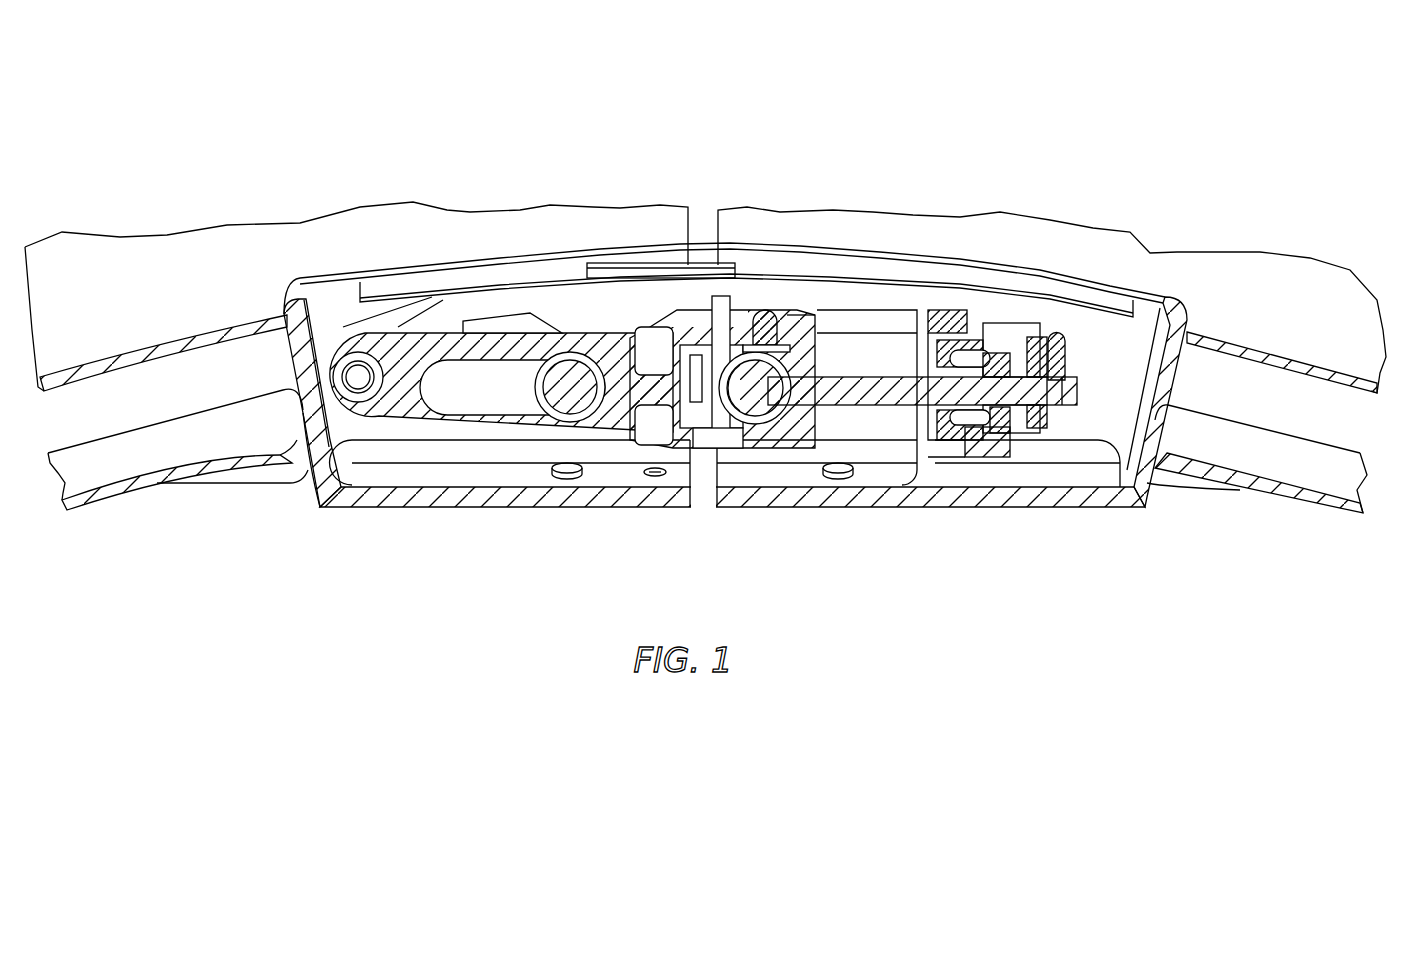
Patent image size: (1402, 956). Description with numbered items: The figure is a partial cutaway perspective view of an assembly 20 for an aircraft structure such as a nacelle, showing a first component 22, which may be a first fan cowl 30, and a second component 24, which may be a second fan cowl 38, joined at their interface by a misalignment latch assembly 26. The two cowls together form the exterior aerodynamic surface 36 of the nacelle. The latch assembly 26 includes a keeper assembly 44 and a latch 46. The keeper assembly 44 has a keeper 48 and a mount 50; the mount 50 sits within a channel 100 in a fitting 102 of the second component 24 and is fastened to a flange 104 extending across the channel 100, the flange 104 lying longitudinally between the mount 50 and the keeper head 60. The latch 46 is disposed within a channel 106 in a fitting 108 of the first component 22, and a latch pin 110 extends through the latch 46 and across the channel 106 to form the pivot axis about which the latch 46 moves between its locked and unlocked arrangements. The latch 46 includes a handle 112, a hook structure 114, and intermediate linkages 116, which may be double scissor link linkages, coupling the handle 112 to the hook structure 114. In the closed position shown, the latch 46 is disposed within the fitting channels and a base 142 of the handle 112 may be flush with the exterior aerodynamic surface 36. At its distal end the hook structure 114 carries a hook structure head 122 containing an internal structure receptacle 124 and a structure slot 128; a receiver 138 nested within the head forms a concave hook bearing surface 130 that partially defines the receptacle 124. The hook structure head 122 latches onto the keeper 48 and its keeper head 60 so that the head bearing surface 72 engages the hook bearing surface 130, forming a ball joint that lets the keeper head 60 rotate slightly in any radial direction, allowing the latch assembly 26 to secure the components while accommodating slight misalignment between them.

The assembly 20 is at (1252, 140).
The first component 22 is at (351, 317).
The first fan cowl 30 is at (80, 224).
The second component 24 is at (1052, 342).
The second fan cowl 38 is at (1278, 250).
The misalignment latch assembly 26 is at (632, 230).
The exterior aerodynamic surface 36 is at (390, 232).
The keeper assembly 44 is at (860, 420).
The latch 46 is at (520, 455).
The keeper 48 is at (838, 470).
The mount 50 is at (1025, 450).
The keeper head 60 is at (763, 443).
The head bearing surface 72 is at (778, 443).
The channel 100 is at (1133, 343).
The fitting 102 is at (1127, 516).
The flange 104 is at (948, 470).
The channel 106 is at (318, 305).
The fitting 108 is at (338, 520).
The latch pin 110 is at (570, 420).
The handle 112 is at (925, 262).
The hook structure 114 is at (622, 452).
The intermediate linkage 116 is at (505, 310).
The hook structure head 122 is at (793, 306).
The structure receptacle 124 is at (720, 375).
The structure slot 128 is at (728, 448).
The hook bearing surface 130 is at (808, 377).
The receiver 138 is at (765, 312).
The base 142 is at (862, 280).